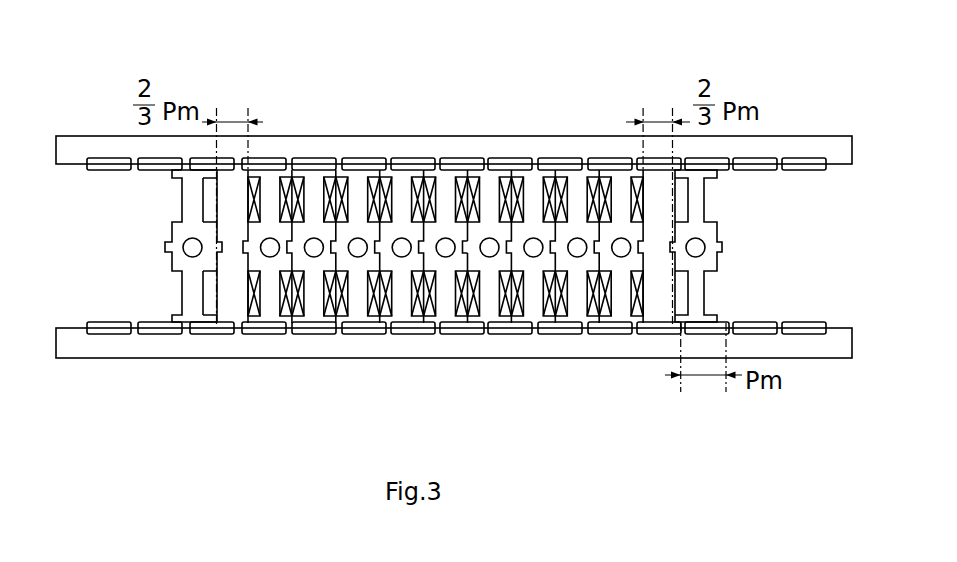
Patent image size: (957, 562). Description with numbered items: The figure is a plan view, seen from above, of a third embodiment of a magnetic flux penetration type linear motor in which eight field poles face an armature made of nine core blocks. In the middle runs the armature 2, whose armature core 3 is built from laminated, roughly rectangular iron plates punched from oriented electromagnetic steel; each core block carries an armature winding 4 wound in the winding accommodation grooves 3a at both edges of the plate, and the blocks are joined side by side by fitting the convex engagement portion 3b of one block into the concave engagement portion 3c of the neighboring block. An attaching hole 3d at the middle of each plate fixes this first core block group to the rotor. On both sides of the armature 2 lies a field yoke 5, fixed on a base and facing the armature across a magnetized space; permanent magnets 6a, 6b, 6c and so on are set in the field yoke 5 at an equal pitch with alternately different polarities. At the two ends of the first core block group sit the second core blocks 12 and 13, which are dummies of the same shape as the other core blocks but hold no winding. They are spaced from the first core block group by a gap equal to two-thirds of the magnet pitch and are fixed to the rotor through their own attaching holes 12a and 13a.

The armature 2 is at (451, 241).
The armature core 3 is at (315, 187).
The winding accommodation groove 3a is at (597, 303).
The convex engagement portion 3b is at (508, 243).
The concave engagement portion 3c is at (468, 253).
The attaching hole 3d is at (401, 240).
The armature winding 4 is at (587, 183).
The field yoke 5 is at (352, 147).
The permanent magnet 6a is at (320, 328).
The permanent magnet 6b is at (268, 325).
The permanent magnet 6c is at (198, 325).
The second core block 12 is at (146, 246).
The attaching hole 12a is at (183, 248).
The second core block 13 is at (735, 246).
The attaching hole 13a is at (698, 253).